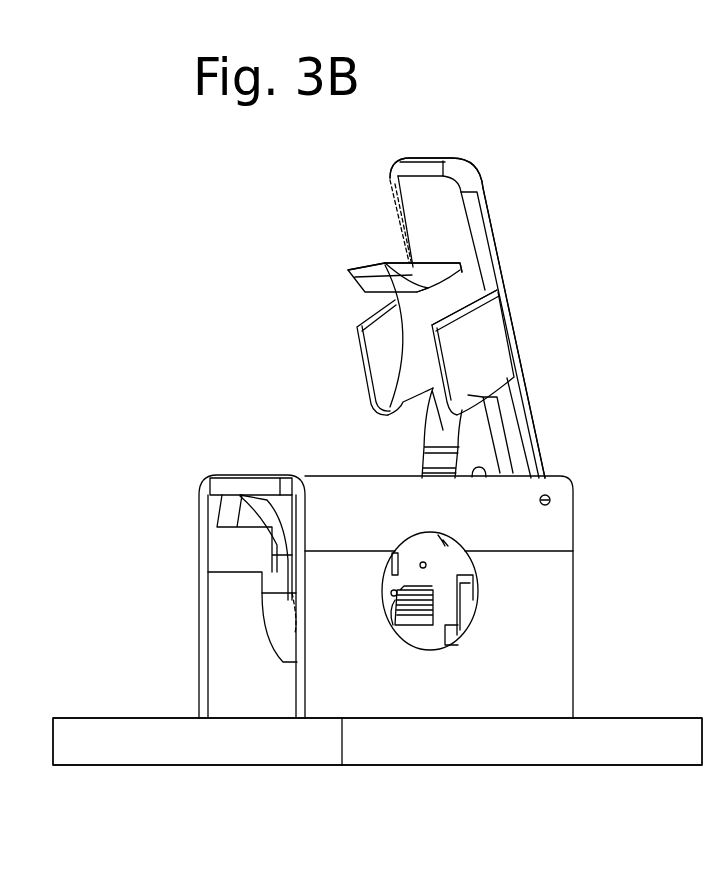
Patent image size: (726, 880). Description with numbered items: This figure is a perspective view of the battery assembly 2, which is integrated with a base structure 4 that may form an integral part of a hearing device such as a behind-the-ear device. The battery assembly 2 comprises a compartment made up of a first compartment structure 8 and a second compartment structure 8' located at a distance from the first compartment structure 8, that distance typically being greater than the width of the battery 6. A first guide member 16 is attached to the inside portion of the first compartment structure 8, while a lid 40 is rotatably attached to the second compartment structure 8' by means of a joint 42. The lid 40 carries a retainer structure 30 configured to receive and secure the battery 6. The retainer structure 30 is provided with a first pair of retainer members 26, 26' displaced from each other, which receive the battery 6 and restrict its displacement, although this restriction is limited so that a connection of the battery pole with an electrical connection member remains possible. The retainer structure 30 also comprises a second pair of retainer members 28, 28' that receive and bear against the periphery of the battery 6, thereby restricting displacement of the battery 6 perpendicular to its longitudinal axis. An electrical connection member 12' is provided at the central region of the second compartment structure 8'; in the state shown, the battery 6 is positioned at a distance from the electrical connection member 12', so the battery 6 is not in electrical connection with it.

The battery assembly 2 is at (222, 176).
The base structure 4 is at (108, 718).
The battery 6 is at (443, 583).
The first compartment structure 8 is at (196, 596).
The second compartment structure 8' is at (458, 593).
The electrical connection member 12' is at (458, 712).
The first guide member 16 is at (282, 624).
The retainer member 26 is at (335, 340).
The retainer member 26' is at (518, 352).
The retainer member 28 is at (387, 228).
The retainer member 28' is at (399, 433).
The retainer structure 30 is at (310, 268).
The lid 40 is at (440, 156).
The joint 42 is at (545, 494).